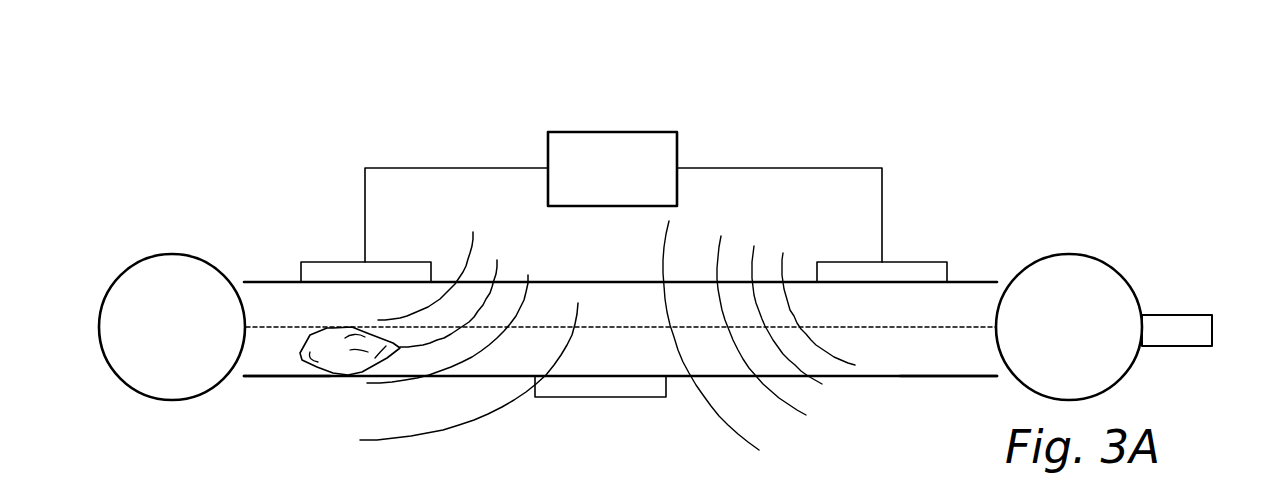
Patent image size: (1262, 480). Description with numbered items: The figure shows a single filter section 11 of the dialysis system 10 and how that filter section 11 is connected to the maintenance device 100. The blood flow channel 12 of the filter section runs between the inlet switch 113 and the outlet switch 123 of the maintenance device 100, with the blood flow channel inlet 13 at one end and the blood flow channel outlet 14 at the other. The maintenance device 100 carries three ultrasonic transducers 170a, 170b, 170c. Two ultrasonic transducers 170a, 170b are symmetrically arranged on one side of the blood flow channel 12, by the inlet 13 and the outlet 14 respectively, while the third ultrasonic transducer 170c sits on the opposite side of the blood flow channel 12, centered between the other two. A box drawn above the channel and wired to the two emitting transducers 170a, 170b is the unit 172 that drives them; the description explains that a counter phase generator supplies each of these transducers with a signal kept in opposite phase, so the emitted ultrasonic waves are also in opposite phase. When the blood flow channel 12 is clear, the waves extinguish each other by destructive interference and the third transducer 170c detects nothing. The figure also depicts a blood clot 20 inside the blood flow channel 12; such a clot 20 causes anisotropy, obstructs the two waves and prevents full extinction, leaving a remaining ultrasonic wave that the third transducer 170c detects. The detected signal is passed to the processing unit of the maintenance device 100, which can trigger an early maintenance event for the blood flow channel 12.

The dialysis system 10 is at (1033, 105).
The filter section 11 is at (902, 138).
The maintenance device 100 is at (1170, 142).
The blood flow channel 12 is at (497, 355).
The blood flow channel inlet 13 is at (262, 357).
The blood flow channel outlet 14 is at (970, 353).
The blood clot 20 is at (333, 355).
The inlet switch 113 is at (171, 290).
The outlet switch 123 is at (1073, 273).
The ultrasonic transducer 170a is at (325, 270).
The ultrasonic transducer 170b is at (923, 268).
The third ultrasonic transducer 170c is at (643, 390).
The controller 172 is at (618, 165).